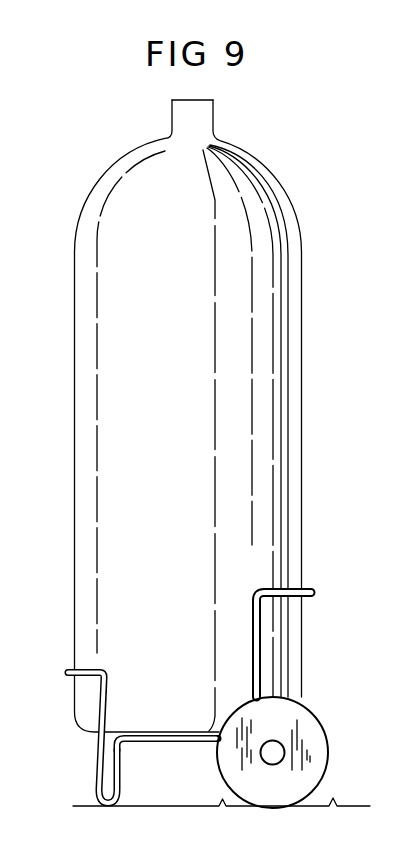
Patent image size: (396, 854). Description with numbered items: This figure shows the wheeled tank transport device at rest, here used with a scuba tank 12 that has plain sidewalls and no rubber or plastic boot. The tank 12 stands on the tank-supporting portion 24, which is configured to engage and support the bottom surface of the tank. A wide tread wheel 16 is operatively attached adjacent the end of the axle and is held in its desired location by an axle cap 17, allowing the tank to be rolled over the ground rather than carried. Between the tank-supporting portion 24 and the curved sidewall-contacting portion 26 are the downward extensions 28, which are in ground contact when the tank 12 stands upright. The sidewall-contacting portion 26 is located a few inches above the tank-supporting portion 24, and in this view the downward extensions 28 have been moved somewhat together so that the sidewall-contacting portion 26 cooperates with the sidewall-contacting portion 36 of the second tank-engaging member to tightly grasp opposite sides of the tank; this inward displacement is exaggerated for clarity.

The scuba tank 12 is at (296, 366).
The wide tread wheel 16 is at (307, 722).
The axle cap 17 is at (268, 762).
The tank-supporting portion 24 is at (183, 742).
The sidewall-contacting portion 26 is at (66, 671).
The downward extensions 28 is at (97, 765).
The sidewall-contacting portion 36 is at (308, 590).